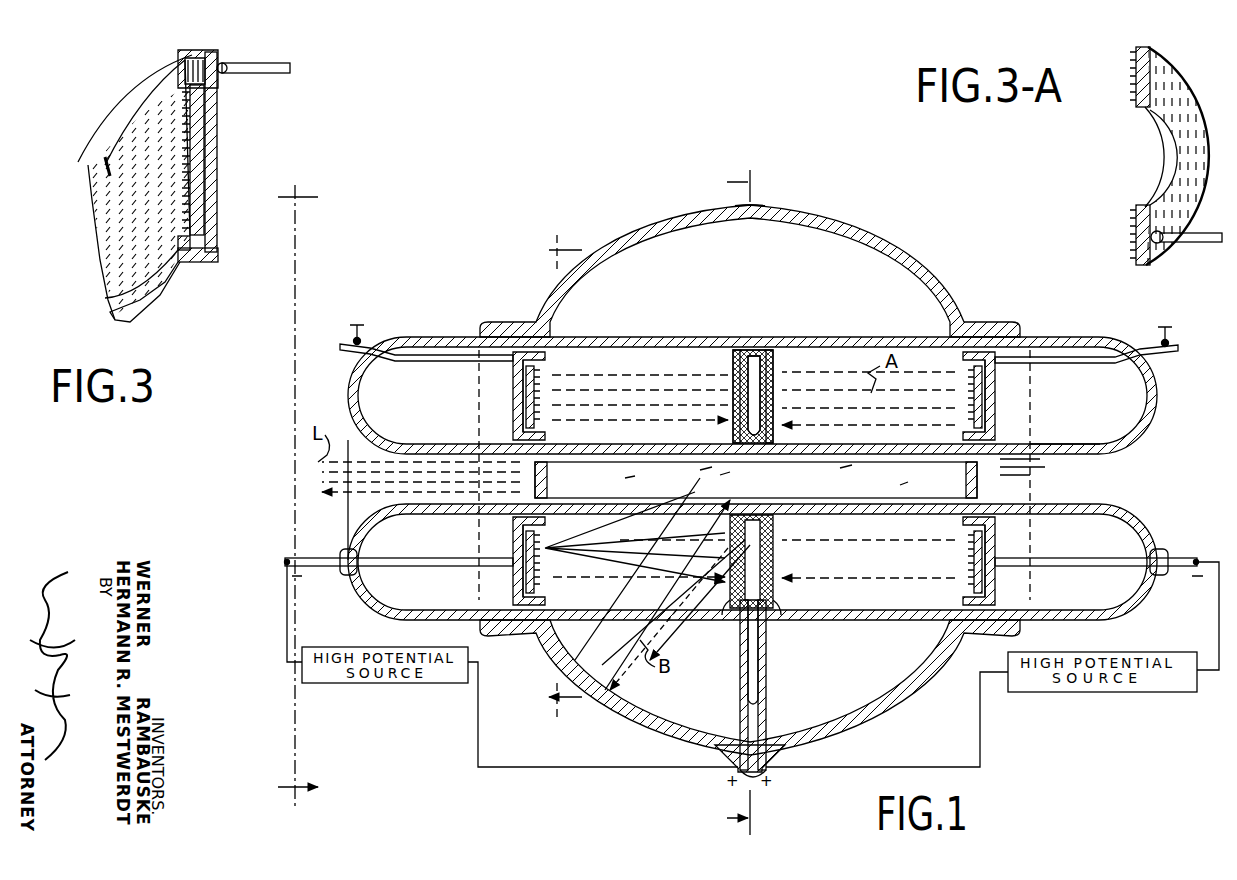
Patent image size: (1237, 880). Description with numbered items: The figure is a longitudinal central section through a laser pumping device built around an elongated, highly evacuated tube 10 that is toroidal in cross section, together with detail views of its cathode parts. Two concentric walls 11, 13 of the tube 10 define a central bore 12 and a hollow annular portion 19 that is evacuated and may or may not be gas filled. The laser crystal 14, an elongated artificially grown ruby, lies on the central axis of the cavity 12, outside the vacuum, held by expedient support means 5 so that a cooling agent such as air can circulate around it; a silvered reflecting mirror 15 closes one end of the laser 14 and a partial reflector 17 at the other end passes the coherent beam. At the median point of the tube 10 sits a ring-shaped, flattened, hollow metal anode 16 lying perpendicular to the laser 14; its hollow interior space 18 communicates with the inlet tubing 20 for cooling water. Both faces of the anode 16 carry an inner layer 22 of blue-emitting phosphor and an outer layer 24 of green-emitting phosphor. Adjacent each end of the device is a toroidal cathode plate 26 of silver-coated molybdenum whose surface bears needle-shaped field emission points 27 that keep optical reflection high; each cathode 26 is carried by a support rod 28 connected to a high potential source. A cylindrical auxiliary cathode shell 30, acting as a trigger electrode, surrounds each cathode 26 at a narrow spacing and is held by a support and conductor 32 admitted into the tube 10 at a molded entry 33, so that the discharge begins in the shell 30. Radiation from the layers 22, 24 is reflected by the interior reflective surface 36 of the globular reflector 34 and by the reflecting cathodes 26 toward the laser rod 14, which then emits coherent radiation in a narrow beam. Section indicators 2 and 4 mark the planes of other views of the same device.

In FIG. 1, the evacuated tube 10 is at (425, 300).
In FIG. 1, the concentric wall 11 is at (1040, 444).
In FIG. 1, the bore 12 is at (1070, 497).
In FIG. 1, the concentric wall 13 is at (846, 338).
In FIG. 1, the laser crystal 14 is at (842, 486).
In FIG. 1, the silvered reflecting mirror 15 is at (978, 486).
In FIG. 1, the anode 16 is at (752, 388).
In FIG. 1, the partial reflector 17 is at (545, 488).
In FIG. 1, the hollow interior space 18 is at (764, 352).
In FIG. 1, the hollow annular portion 19 is at (422, 414).
In FIG. 1, the inlet tubing 20 is at (768, 712).
In FIG. 1, the inner fluorescent layer 22 is at (776, 371).
In FIG. 1, the outer fluorescent layer 24 is at (775, 360).
In FIG. 1, the cathode plate 26 is at (528, 410).
In FIG. 3, the cathode plate 26 is at (208, 112).
In FIG. 3-A, the cathode plate 26 is at (1150, 172).
In FIG. 1, the needle-shaped field emission points 27 is at (970, 556).
In FIG. 3, the needle-shaped field emission points 27 is at (205, 150).
In FIG. 3-A, the needle-shaped field emission points 27 is at (1136, 248).
In FIG. 1, the support rod 28 is at (1182, 553).
In FIG. 3-A, the support rod 28 is at (1212, 244).
In FIG. 1, the auxiliary cathode shell 30 is at (988, 417).
In FIG. 3, the auxiliary cathode shell 30 is at (218, 255).
In FIG. 1, the support and conductor 32 is at (1110, 365).
In FIG. 3, the support and conductor 32 is at (290, 68).
In FIG. 1, the conductor entry 33 is at (1142, 345).
In FIG. 1, the globular reflector 34 is at (895, 238).
In FIG. 1, the interior reflective surface 36 is at (672, 236).
In FIG. 1, the section line 2- 2 is at (308, 496).
In FIG. 1, the section line 4- 4 is at (754, 478).
In FIG. 1, the support means 5 is at (924, 530).